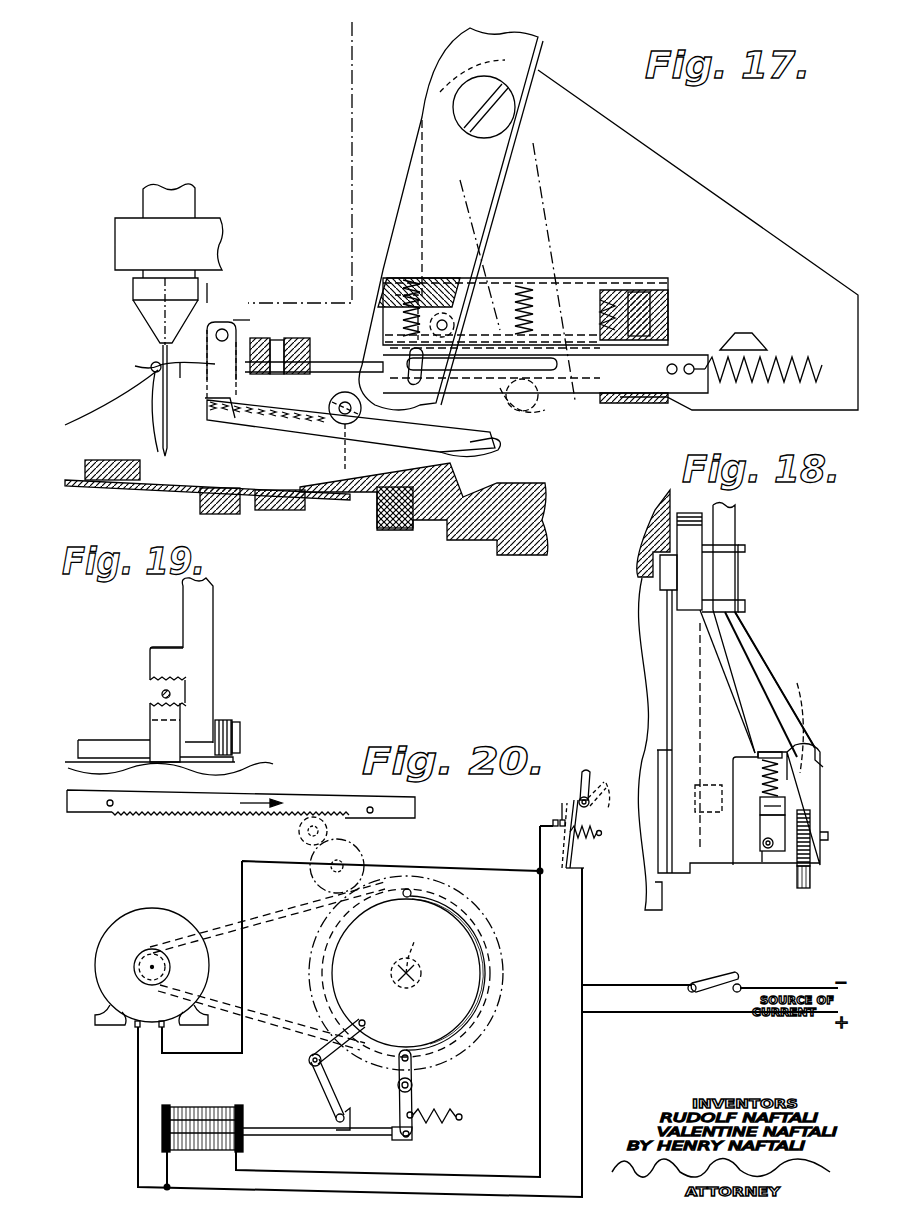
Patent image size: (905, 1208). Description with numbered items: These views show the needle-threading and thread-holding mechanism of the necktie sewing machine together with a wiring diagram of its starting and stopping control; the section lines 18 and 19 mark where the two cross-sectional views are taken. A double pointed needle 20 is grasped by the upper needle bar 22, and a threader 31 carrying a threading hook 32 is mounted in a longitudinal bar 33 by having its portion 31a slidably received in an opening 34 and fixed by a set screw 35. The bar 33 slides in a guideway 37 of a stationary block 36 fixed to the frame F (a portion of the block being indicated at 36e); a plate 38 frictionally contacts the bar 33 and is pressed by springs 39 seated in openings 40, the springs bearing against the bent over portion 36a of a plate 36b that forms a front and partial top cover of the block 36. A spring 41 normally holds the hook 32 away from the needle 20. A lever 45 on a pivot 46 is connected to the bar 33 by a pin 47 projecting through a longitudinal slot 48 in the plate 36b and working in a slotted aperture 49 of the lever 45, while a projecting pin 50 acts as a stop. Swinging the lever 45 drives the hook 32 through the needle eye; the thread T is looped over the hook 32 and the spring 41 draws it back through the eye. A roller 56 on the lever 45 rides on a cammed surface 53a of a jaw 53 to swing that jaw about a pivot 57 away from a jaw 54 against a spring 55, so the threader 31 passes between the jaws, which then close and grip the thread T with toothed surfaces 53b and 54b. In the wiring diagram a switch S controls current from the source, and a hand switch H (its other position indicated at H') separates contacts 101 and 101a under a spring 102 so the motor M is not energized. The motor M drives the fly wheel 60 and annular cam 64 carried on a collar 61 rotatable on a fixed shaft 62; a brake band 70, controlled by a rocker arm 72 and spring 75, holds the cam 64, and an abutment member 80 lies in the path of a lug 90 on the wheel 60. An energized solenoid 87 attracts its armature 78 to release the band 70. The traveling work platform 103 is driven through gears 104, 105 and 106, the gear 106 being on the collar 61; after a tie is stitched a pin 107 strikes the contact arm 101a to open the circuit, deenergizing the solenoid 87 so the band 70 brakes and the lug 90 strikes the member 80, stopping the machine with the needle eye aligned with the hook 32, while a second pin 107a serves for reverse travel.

In FIG. 17, the section line 18 is at (300, 36).
In FIG. 17, the section line 19 is at (207, 283).
In FIG. 17, the double pointed needle 20 is at (160, 415).
In FIG. 17, the upper needle bar 22 is at (183, 207).
In FIG. 17, the threader 31 is at (182, 378).
In FIG. 19, the threader 31 is at (160, 692).
In FIG. 17, the portion of threader 31a is at (240, 306).
In FIG. 18, the portion of threader 31a is at (762, 842).
In FIG. 17, the threading hook 32 is at (150, 366).
In FIG. 17, the longitudinal bar 33 is at (335, 355).
In FIG. 18, the longitudinal bar 33 is at (775, 828).
In FIG. 17, the opening 34 is at (296, 352).
In FIG. 17, the set screw 35 is at (276, 338).
In FIG. 17, the stationary block 36 is at (680, 292).
In FIG. 18, the stationary block 36 is at (750, 855).
In FIG. 18, the bent over portion 36a is at (768, 752).
In FIG. 18, the plate 36b is at (812, 826).
In FIG. 18, the housing plate 36e is at (713, 697).
In FIG. 18, the guideway 37 is at (765, 862).
In FIG. 17, the plate 38 is at (650, 292).
In FIG. 17, the springs 39 is at (614, 290).
In FIG. 18, the springs 39 is at (805, 715).
In FIG. 17, the openings 40 is at (612, 300).
In FIG. 18, the openings 40 is at (792, 760).
In FIG. 17, the spring 41 is at (800, 355).
In FIG. 17, the lever 45 is at (435, 185).
In FIG. 18, the lever 45 is at (755, 665).
In FIG. 19, the lever 45 is at (198, 628).
In FIG. 17, the pivot 46 is at (505, 98).
In FIG. 18, the pivot 46 is at (650, 588).
In FIG. 17, the pin 47 is at (425, 335).
In FIG. 18, the pin 47 is at (828, 840).
In FIG. 17, the longitudinal slot 48 is at (532, 405).
In FIG. 17, the slotted aperture 49 is at (452, 327).
In FIG. 17, the projecting pin 50 is at (677, 362).
In FIG. 17, the jaw member 53 is at (210, 400).
In FIG. 19, the jaw member 53 is at (200, 662).
In FIG. 17, the cammed surface 53a is at (500, 440).
In FIG. 19, the toothed surface 53b is at (143, 649).
In FIG. 17, the jaw member 54 is at (290, 432).
In FIG. 19, the jaw member 54 is at (152, 724).
In FIG. 19, the toothed surface 54b is at (175, 700).
In FIG. 17, the spring 55 is at (395, 500).
In FIG. 19, the spring 55 is at (235, 722).
In FIG. 17, the roller 56 is at (368, 345).
In FIG. 18, the roller 56 is at (806, 888).
In FIG. 17, the pivot 57 is at (340, 470).
In FIG. 20, the fly wheel 60 is at (492, 958).
In FIG. 20, the collar 61 is at (420, 976).
In FIG. 20, the fixed shaft 62 is at (416, 940).
In FIG. 20, the annular cam 64 is at (447, 923).
In FIG. 20, the brake band 70 is at (462, 937).
In FIG. 20, the rocker arm 72 is at (415, 1100).
In FIG. 20, the spring 75 is at (450, 1120).
In FIG. 20, the armature 78 is at (262, 1125).
In FIG. 20, the abutment member 80 is at (338, 1090).
In FIG. 20, the solenoid 87 is at (200, 1115).
In FIG. 20, the lug 90 is at (362, 1018).
In FIG. 20, the contact 101 is at (553, 820).
In FIG. 20, the contact arm 101a is at (563, 817).
In FIG. 20, the spring 102 is at (590, 838).
In FIG. 20, the traveling work platform 103 is at (192, 800).
In FIG. 20, the gear 104 is at (298, 833).
In FIG. 20, the gear 105 is at (312, 874).
In FIG. 20, the gear 106 is at (314, 948).
In FIG. 20, the pin 107 is at (372, 812).
In FIG. 20, the second pin 107a is at (110, 806).
In FIG. 17, the frame F is at (625, 175).
In FIG. 18, the frame F is at (662, 893).
In FIG. 19, the frame F is at (245, 768).
In FIG. 17, the thread T is at (105, 416).
In FIG. 20, the hand switch H is at (588, 808).
In FIG. 20, the switch alternate position H' is at (593, 825).
In FIG. 20, the motor M is at (126, 938).
In FIG. 20, the switch S is at (712, 978).